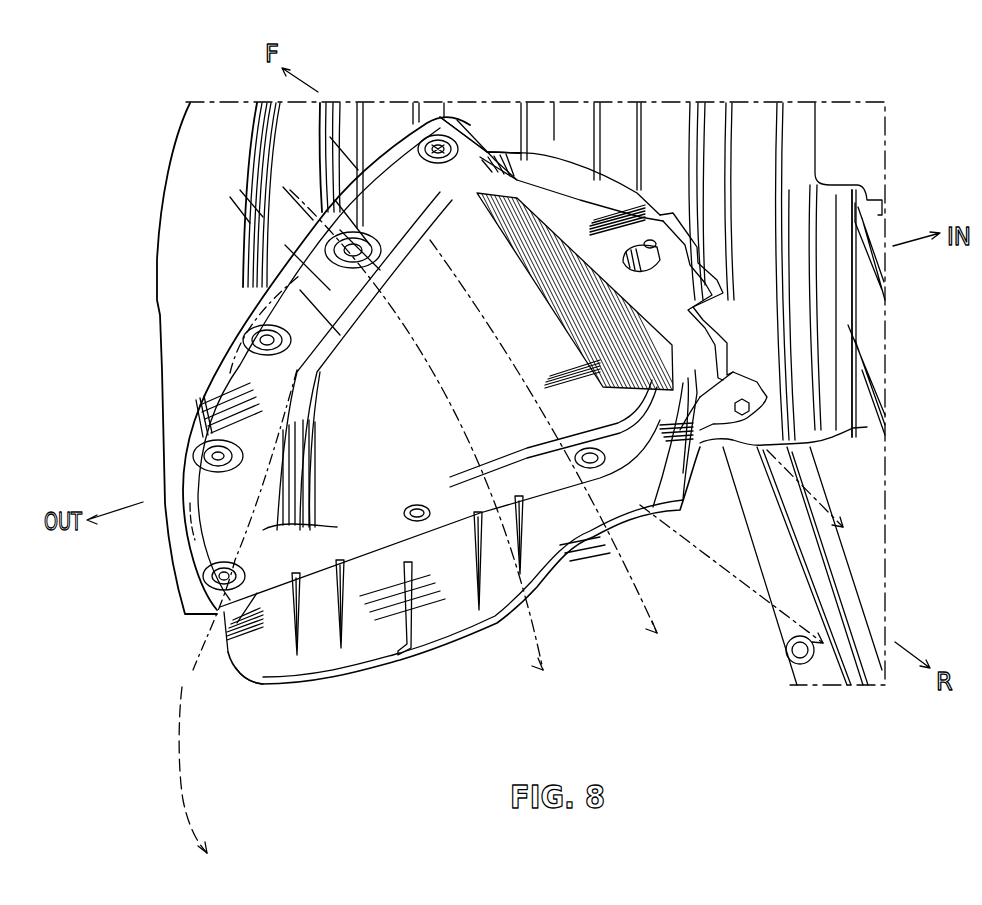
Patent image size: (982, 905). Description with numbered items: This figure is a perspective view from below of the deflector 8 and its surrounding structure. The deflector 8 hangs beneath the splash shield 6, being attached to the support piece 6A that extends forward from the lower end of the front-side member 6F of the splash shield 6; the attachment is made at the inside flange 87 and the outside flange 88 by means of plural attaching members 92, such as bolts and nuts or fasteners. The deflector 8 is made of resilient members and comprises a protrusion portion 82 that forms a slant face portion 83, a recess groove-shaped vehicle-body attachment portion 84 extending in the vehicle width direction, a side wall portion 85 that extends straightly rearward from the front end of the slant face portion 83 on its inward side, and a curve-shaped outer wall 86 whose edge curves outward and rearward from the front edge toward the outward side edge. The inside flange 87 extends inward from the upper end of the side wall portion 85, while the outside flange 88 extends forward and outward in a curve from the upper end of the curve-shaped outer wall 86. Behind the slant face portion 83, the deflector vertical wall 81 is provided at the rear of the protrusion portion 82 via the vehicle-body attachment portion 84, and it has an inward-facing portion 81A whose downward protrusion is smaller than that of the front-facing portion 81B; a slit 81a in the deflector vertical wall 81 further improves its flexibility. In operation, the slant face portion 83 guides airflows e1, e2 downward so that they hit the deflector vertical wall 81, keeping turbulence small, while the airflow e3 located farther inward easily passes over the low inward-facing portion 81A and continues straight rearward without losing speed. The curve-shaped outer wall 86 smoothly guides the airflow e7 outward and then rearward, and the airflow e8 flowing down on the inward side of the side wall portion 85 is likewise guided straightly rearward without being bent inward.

The splash shield 6 is at (744, 90).
The support piece 6A is at (570, 178).
The front-side member 6F is at (680, 126).
The deflector 8 is at (188, 381).
The deflector vertical wall 81 is at (466, 653).
The inward-facing portion 81A is at (640, 527).
The front-facing portion 81B is at (255, 672).
The slit 81a is at (400, 647).
The protrusion portion 82 is at (407, 617).
The slant face portion 83 is at (340, 604).
The vehicle-body attachment portion 84 is at (552, 477).
The side wall portion 85 is at (622, 342).
The curve-shaped outer wall 86 is at (313, 405).
The inside flange 87 is at (615, 205).
The outside flange 88 is at (253, 322).
The attaching members 92 is at (195, 457).
The airflow e1 is at (390, 377).
The airflow e2 is at (463, 414).
The airflow e3 is at (495, 330).
The airflow e7 is at (182, 687).
The airflow e8 is at (467, 127).